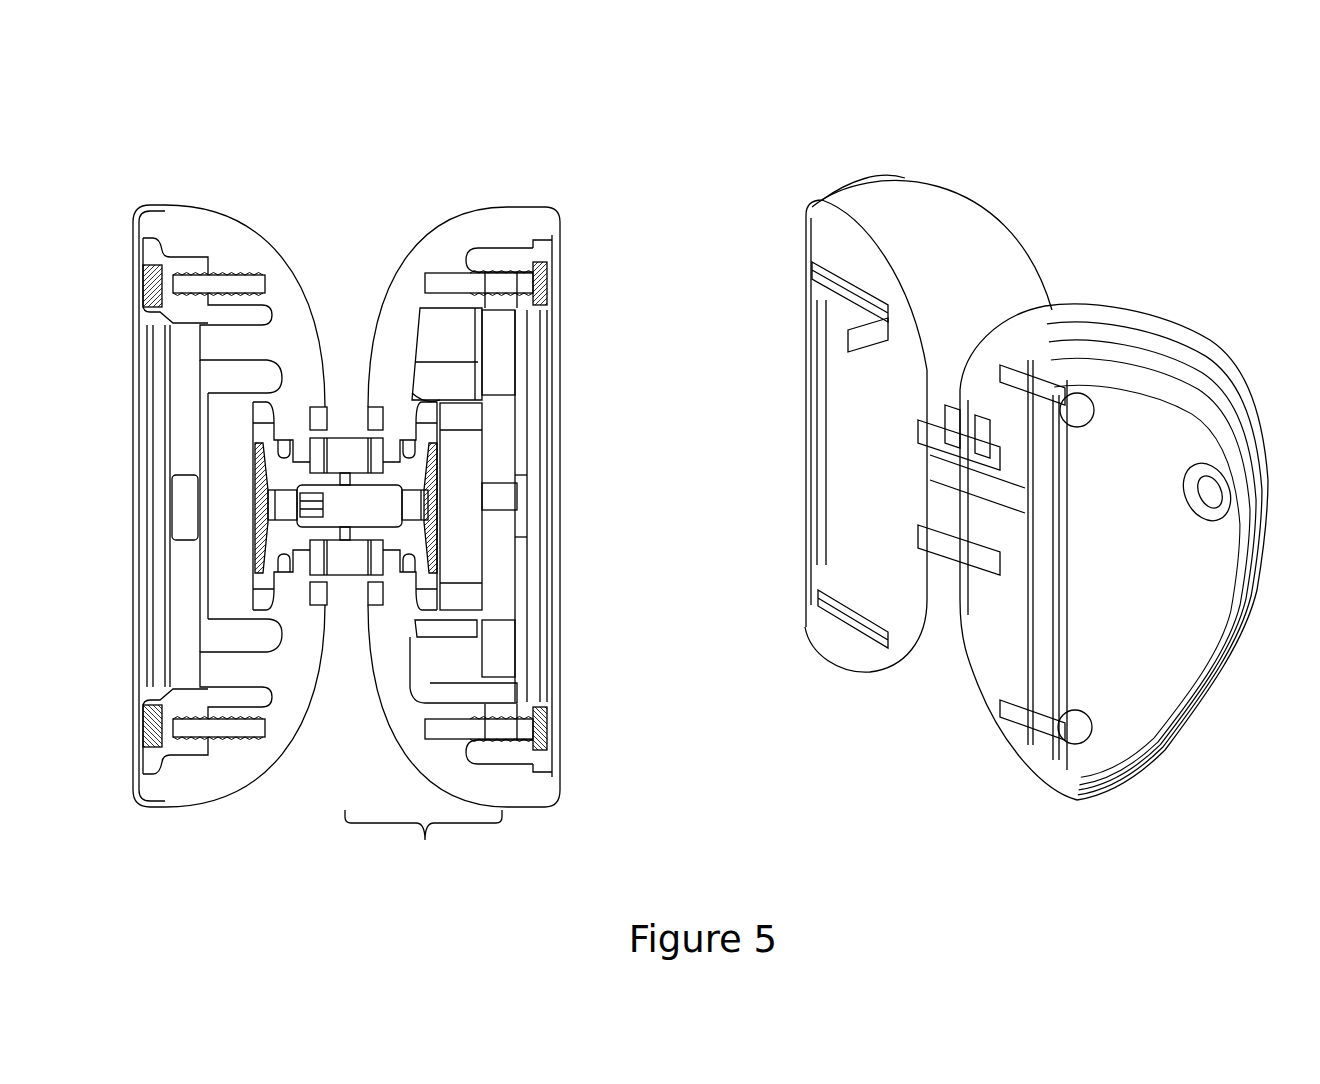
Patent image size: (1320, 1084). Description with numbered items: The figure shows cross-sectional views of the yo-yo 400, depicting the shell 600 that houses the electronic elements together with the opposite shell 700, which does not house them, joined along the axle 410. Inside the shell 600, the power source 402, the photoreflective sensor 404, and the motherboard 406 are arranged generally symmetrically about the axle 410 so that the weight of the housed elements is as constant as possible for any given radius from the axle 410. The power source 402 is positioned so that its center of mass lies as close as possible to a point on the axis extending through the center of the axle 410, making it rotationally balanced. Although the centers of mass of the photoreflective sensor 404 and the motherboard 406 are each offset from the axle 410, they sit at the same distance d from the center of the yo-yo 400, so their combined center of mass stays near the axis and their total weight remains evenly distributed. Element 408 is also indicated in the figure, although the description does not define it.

The yo-yo 400 is at (756, 148).
The shell 700 is at (175, 223).
The shell 600 is at (452, 245).
The axle 410 is at (347, 508).
The photoreflective sensor 404 is at (1045, 472).
The power source 402 is at (1013, 520).
The motherboard 406 is at (1045, 647).
The cavity 408 is at (1108, 650).